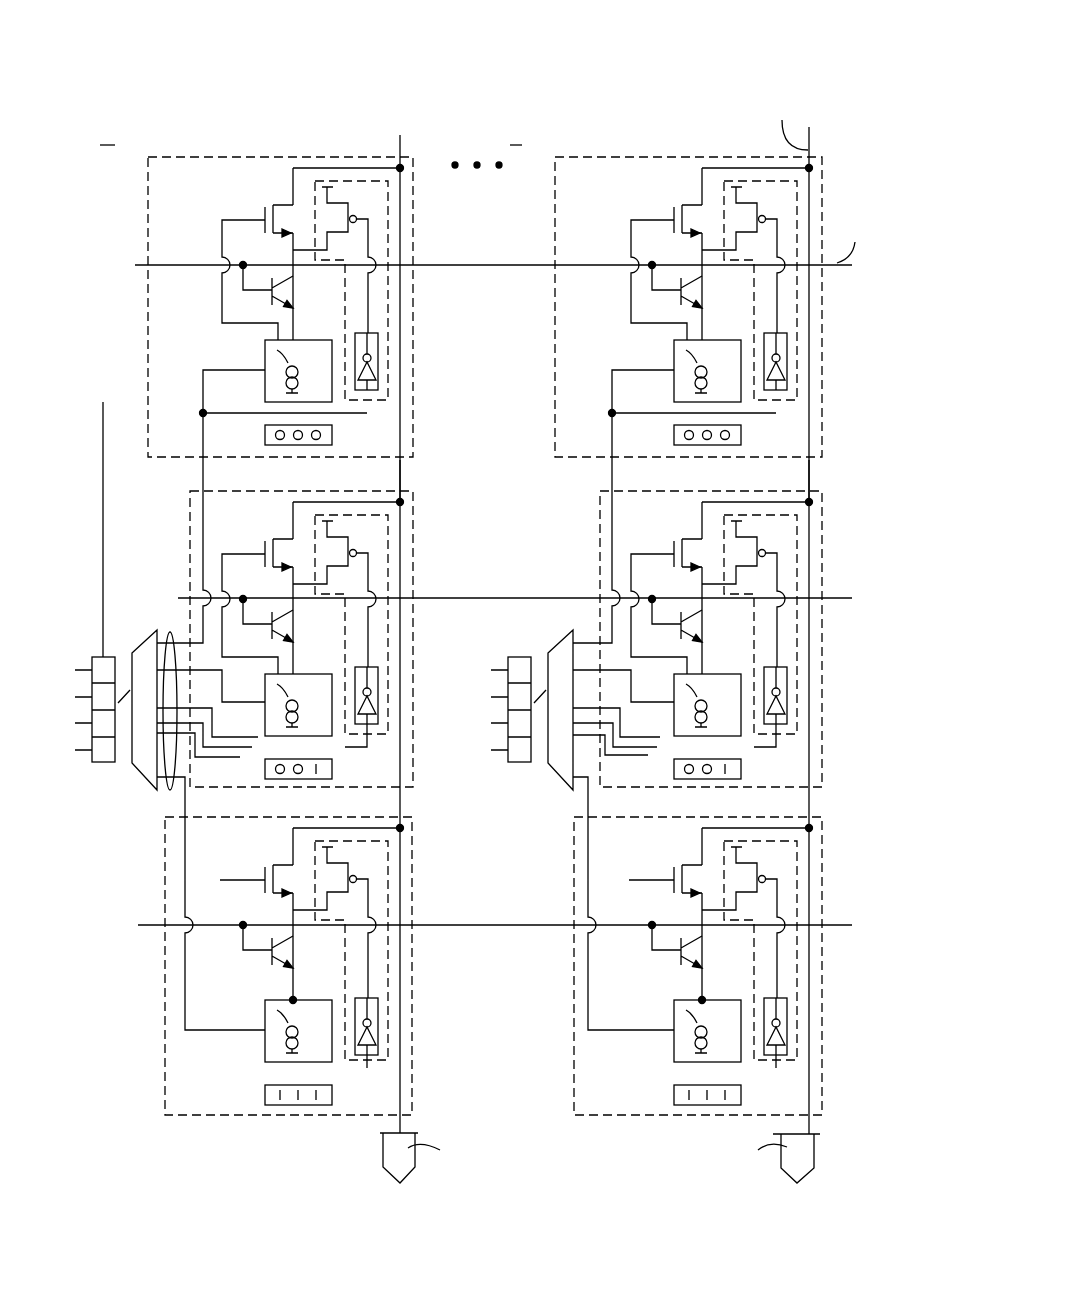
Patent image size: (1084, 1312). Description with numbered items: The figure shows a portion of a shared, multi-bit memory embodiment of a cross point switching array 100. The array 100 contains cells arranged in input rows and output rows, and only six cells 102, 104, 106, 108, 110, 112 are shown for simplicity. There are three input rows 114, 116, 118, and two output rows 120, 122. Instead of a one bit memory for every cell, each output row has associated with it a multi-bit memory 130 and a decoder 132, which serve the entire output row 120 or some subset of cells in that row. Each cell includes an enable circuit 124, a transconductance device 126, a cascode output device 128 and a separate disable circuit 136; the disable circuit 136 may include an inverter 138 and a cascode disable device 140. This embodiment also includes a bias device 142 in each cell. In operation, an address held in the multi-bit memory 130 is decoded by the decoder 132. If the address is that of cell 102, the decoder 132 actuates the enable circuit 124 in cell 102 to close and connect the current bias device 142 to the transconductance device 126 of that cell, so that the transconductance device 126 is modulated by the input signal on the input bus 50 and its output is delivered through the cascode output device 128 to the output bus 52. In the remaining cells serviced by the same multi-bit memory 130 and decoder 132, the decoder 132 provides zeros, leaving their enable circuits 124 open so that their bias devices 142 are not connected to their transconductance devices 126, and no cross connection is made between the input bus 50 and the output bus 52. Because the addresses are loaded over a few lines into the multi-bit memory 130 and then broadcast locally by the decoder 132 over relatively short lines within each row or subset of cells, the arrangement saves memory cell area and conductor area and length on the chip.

The array 100 is at (740, 38).
The cell 102 is at (190, 444).
The cell 104 is at (595, 444).
The cell 106 is at (230, 782).
The cell 108 is at (638, 782).
The cell 110 is at (205, 1105).
The cell 112 is at (612, 1105).
The input row 114 is at (110, 316).
The input row 116 is at (130, 490).
The input row 118 is at (112, 890).
The output row 120 is at (235, 128).
The output row 122 is at (643, 128).
The enable circuit 124 is at (265, 356).
The transconductance device 126 is at (486, 615).
The cascode output device 128 is at (462, 538).
The multi-bit memory 130 is at (98, 656).
The decoder 132 is at (142, 775).
The disable circuit 136 is at (390, 200).
The inverter 138 is at (379, 345).
The cascode disable device 140 is at (168, 633).
The bias device 142 is at (509, 697).
The input bus 50 is at (400, 478).
The output bus 52 is at (809, 478).